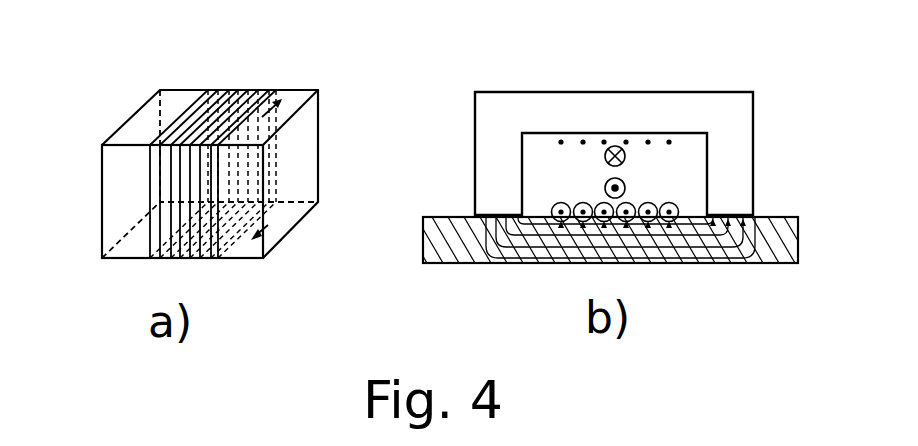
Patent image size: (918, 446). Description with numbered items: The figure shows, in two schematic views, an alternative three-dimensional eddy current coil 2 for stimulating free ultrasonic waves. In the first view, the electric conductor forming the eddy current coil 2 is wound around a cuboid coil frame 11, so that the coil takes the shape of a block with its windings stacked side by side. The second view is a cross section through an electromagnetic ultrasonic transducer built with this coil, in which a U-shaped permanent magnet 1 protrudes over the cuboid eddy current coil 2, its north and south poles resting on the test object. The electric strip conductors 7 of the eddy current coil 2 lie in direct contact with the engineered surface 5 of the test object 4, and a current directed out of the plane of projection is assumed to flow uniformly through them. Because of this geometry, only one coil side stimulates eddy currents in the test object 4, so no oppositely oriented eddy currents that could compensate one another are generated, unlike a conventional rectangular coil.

The U-shaped permanent magnet 1 is at (734, 103).
The eddy current coil 2 is at (250, 87).
The test object 4 is at (438, 240).
The engineered surface 5 is at (771, 214).
The electric strip conductors 7 is at (666, 212).
The cuboid coil frame 11 is at (133, 115).